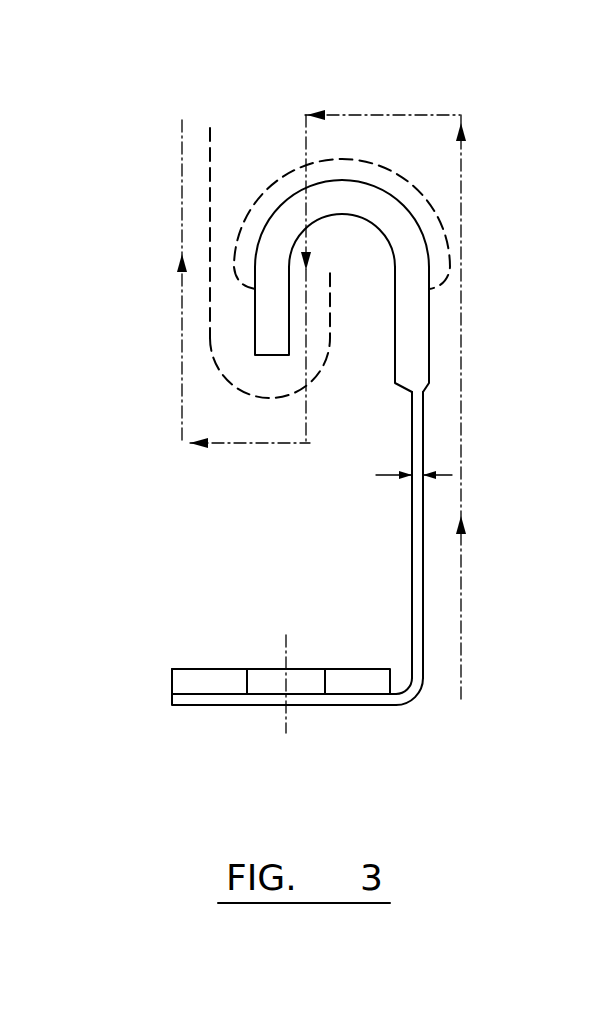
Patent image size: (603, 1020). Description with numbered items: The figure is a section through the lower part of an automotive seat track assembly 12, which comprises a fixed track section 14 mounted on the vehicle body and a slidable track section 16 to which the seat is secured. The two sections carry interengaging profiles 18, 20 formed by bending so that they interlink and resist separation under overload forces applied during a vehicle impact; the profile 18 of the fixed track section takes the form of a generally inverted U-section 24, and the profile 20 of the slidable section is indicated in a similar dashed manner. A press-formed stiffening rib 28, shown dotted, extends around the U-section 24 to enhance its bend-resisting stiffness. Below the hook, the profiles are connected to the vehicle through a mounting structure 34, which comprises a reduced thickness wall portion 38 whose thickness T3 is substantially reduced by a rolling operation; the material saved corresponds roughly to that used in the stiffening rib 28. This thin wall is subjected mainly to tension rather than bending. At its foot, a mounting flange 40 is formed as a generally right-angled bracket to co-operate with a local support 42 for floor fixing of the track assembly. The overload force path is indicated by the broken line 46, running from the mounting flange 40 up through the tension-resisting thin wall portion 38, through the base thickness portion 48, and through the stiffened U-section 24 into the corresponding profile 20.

The seat track assembly 12 is at (150, 422).
The fixed track section 14 is at (418, 701).
The slidable track section 16 is at (208, 228).
The profile of fixed track section 18 is at (286, 192).
The profile of slidable track section 20 is at (258, 404).
The U-section 24 is at (348, 205).
The stiffening rib 28 is at (430, 205).
The mounting structure 34 is at (430, 555).
The reduced thickness wall portion 38 is at (423, 597).
The mounting flange 40 is at (338, 703).
The local support 42 is at (217, 683).
The force path 46 is at (180, 342).
The base thickness portion 48 is at (418, 372).
The thickness of reduced thickness wall portion T3 is at (418, 467).